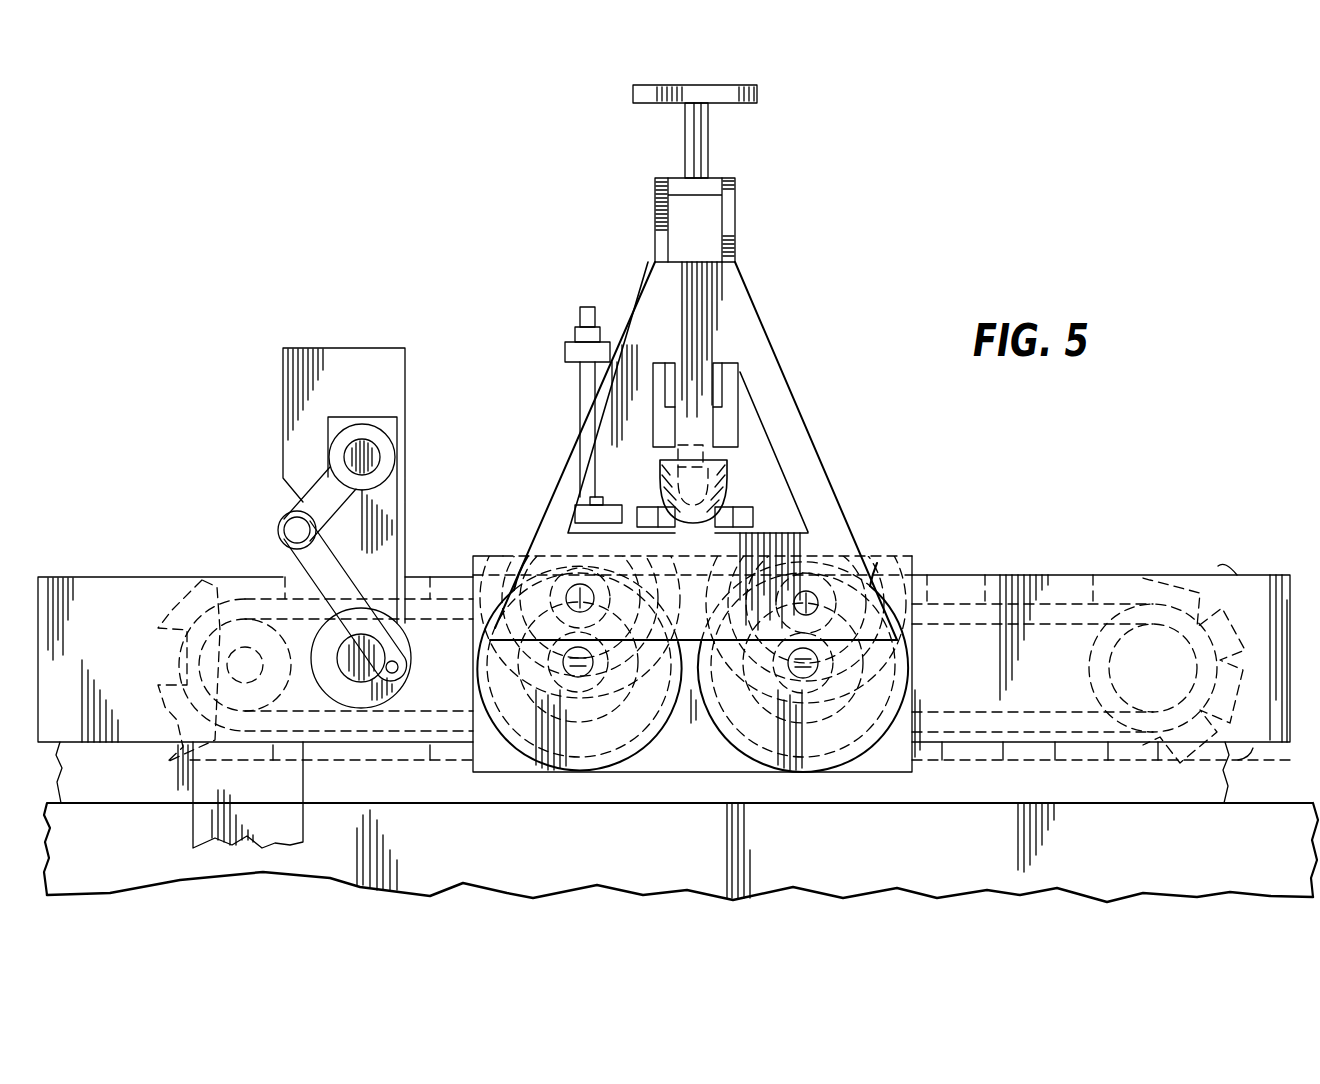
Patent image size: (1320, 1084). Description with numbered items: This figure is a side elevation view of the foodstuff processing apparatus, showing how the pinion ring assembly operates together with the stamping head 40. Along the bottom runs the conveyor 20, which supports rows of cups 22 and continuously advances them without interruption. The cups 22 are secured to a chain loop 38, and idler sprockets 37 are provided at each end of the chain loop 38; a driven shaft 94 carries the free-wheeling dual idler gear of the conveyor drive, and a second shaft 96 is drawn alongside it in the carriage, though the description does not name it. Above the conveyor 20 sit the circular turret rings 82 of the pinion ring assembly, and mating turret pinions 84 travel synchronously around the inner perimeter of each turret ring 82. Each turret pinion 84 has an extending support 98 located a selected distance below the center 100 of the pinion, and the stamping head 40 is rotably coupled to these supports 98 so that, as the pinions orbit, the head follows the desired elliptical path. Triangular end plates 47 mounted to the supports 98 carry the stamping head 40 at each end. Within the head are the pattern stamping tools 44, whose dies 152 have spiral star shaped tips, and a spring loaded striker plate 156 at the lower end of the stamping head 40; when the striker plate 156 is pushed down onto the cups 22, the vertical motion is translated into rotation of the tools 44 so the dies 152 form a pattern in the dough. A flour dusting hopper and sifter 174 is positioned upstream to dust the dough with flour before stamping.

The conveyor 20 is at (1102, 600).
The cups 22 is at (178, 742).
The idler sprockets 37 is at (220, 612).
The chain loop 38 is at (158, 643).
The stamping head 40 is at (720, 238).
The pattern stamping tools 44 is at (733, 473).
The end plates 47 is at (790, 410).
The turret rings 82 is at (600, 762).
The turret pinions 84 is at (548, 556).
The driven shaft 94 is at (587, 678).
The axle pin 96 is at (805, 680).
The extending support 98 is at (808, 596).
The center 100 is at (573, 625).
The die 152 is at (722, 490).
The striker plate 156 is at (753, 517).
The flour dusting hopper and sifter 174 is at (333, 362).